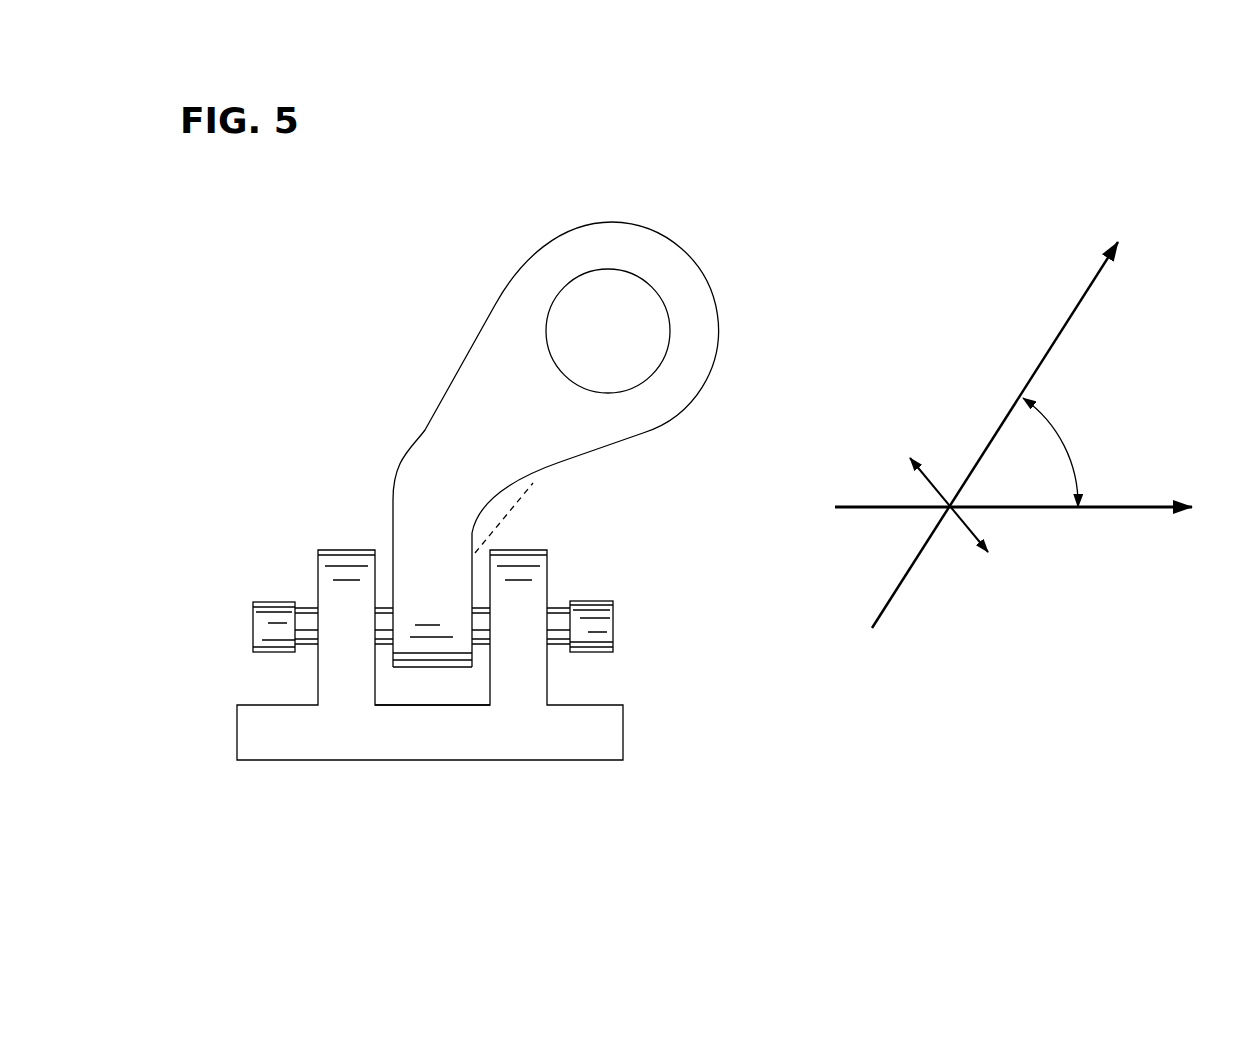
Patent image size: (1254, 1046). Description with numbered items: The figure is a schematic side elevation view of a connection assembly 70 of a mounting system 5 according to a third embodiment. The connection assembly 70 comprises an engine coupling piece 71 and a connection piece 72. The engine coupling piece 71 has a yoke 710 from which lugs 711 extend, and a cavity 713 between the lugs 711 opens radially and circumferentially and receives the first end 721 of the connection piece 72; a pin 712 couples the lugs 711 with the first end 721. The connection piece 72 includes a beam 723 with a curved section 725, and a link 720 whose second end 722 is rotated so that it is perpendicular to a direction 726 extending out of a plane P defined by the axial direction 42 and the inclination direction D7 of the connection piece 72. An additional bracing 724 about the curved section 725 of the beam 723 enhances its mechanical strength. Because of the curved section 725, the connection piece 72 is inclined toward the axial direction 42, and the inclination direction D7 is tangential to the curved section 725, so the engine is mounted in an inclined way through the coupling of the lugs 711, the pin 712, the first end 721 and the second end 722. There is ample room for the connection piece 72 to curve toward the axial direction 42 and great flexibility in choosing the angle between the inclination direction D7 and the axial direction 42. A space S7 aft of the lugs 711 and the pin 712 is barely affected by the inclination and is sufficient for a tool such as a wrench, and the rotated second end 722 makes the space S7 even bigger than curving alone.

The mounting system 5 is at (357, 257).
The connection assembly 70 is at (240, 498).
The engine coupling piece 71 is at (210, 731).
The yoke 710 is at (310, 738).
The lugs 711 is at (327, 682).
The pin 712 is at (307, 620).
The cavity 713 is at (420, 690).
The connection piece 72 is at (370, 487).
The link 720 is at (590, 427).
The first end 721 is at (457, 667).
The second end 722 is at (542, 272).
The beam 723 is at (416, 498).
The bracing 724 is at (503, 513).
The curved section 725 is at (442, 507).
The direction 726 is at (958, 522).
The space S7 is at (663, 618).
The inclination direction D7 is at (1067, 318).
The plane P is at (973, 438).
The axial direction 42 is at (1035, 510).